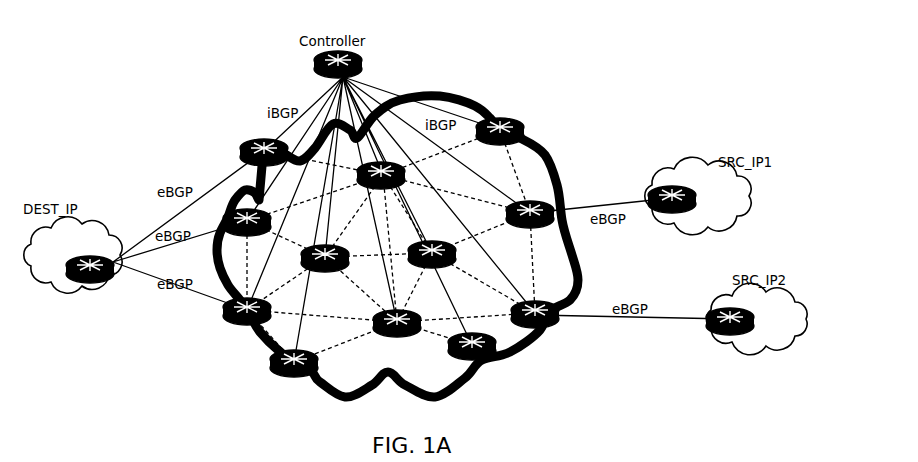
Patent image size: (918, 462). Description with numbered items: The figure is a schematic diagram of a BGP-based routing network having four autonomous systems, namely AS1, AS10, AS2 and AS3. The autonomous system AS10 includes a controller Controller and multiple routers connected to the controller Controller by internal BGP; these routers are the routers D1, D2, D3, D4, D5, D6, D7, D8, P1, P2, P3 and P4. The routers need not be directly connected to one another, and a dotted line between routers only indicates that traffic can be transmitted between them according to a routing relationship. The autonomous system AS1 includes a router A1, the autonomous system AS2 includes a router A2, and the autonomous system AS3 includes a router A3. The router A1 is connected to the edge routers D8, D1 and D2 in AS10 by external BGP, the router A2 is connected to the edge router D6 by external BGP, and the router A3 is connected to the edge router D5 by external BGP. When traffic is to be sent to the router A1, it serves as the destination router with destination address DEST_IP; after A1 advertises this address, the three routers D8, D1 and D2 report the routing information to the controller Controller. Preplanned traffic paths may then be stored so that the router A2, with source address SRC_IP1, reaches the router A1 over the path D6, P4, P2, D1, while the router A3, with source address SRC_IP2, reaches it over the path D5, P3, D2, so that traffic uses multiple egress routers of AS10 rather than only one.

The controller Controller is at (338, 64).
The edge router D1 is at (253, 217).
The edge router D2 is at (242, 321).
The router D3 is at (294, 375).
The router D4 is at (468, 357).
The edge router D5 is at (536, 326).
The edge router D6 is at (530, 205).
The router D7 is at (500, 143).
The edge router D8 is at (260, 144).
The router P1 is at (381, 185).
The router P2 is at (325, 271).
The router P3 is at (397, 334).
The router P4 is at (432, 268).
The router A1 is at (90, 263).
The router A2 is at (672, 189).
The router A3 is at (729, 312).
The autonomous system AS1 is at (73, 255).
The autonomous system AS2 is at (698, 195).
The autonomous system AS3 is at (756, 319).
The autonomous system AS10 is at (397, 246).